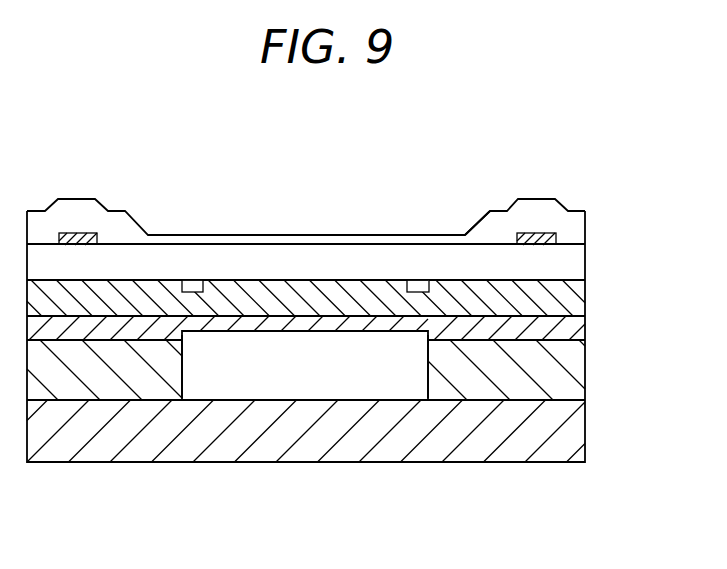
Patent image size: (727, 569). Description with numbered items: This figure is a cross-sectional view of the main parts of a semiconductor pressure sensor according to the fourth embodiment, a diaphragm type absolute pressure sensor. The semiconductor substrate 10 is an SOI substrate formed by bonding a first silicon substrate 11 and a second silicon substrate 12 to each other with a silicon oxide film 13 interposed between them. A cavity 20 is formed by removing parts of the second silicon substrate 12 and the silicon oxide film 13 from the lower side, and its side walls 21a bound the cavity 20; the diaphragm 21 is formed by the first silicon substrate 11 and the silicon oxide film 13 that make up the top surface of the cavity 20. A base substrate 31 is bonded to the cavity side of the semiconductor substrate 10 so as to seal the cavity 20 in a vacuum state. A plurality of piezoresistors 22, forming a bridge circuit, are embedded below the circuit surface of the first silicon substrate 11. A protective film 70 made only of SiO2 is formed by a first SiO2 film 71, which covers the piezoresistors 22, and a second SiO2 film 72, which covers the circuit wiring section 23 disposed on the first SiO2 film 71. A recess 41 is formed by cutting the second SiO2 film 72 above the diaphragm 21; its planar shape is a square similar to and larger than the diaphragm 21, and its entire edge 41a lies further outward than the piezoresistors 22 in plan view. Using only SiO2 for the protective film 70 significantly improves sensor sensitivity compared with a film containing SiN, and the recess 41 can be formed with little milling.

The semiconductor substrate 10 is at (365, 354).
The first silicon substrate 11 is at (575, 300).
The second silicon substrate 12 is at (575, 372).
The silicon oxide film 13 is at (575, 333).
The cavity 20 is at (290, 378).
The diaphragm 21 is at (326, 286).
The cavity side wall 21a is at (183, 333).
The piezoresistor 22 is at (192, 280).
The circuit wiring section 23 is at (70, 233).
The base substrate 31 is at (575, 432).
The recess 41 is at (306, 169).
The edge 41a is at (463, 231).
The protective film 70 is at (365, 241).
The first SiO2 film 71 is at (343, 263).
The second SiO2 film 72 is at (575, 229).